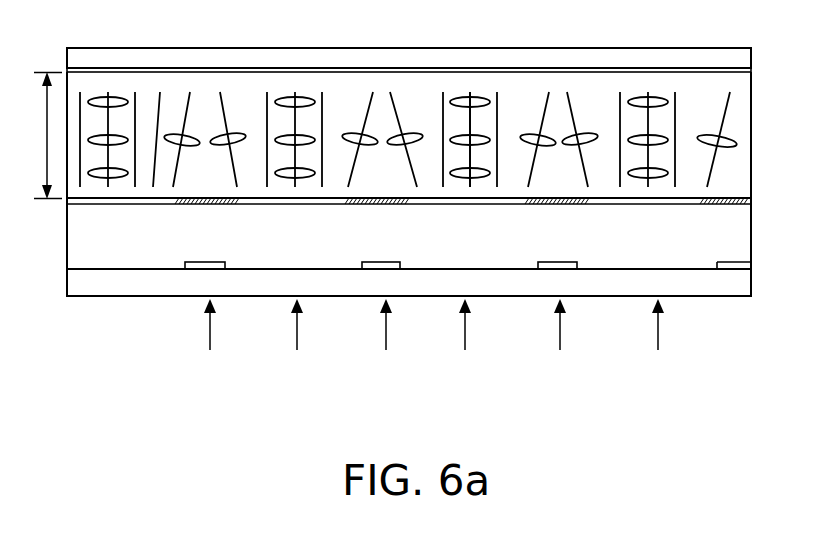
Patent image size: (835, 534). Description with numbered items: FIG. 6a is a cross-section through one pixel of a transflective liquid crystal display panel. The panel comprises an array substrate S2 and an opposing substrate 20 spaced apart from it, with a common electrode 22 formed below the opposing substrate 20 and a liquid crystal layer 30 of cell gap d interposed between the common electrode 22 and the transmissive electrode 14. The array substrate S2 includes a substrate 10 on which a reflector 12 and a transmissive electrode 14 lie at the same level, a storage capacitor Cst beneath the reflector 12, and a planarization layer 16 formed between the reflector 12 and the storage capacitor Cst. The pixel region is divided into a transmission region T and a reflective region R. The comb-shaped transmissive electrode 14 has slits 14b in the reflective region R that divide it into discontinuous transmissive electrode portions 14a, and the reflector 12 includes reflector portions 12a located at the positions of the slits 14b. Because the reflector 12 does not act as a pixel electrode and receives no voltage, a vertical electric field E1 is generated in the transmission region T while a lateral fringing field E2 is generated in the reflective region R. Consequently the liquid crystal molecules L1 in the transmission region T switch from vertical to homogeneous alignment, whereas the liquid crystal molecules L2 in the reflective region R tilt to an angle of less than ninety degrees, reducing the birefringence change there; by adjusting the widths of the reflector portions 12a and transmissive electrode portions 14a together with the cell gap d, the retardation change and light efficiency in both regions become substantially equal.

The opposing substrate 20 is at (725, 58).
The common electrode 22 is at (683, 68).
The liquid crystal layer 30 is at (742, 127).
The liquid crystal molecules in the transmission region L1 is at (462, 100).
The vertical electric field E1 is at (497, 125).
The lateral field E2 is at (538, 126).
The liquid crystal molecules in the reflection region L2 is at (589, 132).
The cell gap d is at (45, 135).
The array substrate S2 is at (763, 200).
The substrate 10 is at (740, 287).
The planarization layer 16 is at (718, 233).
The reflector portions 12a is at (213, 203).
The reflector 12 is at (237, 407).
The transmissive electrode portions 14a is at (462, 203).
The slits 14b is at (397, 204).
The transmissive electrode 14 is at (487, 407).
The storage capacitor Cst is at (540, 270).
The reflective region R is at (384, 337).
The transmission region T is at (477, 337).